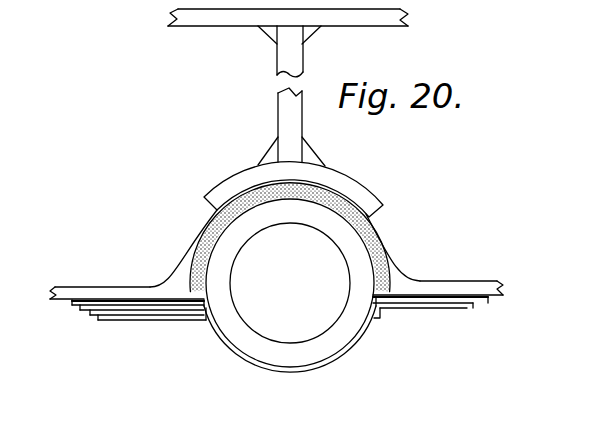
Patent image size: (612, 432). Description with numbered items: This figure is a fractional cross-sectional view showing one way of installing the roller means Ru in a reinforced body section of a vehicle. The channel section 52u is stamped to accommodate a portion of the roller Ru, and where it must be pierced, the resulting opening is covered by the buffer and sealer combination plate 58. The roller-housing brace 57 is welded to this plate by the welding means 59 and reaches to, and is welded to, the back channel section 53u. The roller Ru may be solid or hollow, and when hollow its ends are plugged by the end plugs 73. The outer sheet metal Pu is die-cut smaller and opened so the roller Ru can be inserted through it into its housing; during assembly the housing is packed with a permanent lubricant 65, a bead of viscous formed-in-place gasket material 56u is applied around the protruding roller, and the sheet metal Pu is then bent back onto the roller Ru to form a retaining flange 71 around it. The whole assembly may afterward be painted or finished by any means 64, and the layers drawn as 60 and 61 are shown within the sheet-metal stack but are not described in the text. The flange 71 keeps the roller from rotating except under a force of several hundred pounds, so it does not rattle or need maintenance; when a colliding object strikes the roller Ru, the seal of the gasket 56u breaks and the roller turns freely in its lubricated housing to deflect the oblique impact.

The back channel section 53u is at (178, 28).
The roller-housing brace 57 is at (304, 59).
The welding means 59 is at (269, 38).
The buffer and sealer combination plate 58 is at (372, 190).
The permanent lubricant 65 is at (323, 193).
The retaining flange 71 is at (212, 306).
The end plug 73 is at (258, 340).
The roller means Ru is at (320, 368).
The formed-in-place gasket material 56u is at (190, 290).
The channel section 52u is at (115, 286).
The sheet metal Pu is at (108, 302).
The first ply layer 60 is at (138, 308).
The second ply layer 61 is at (168, 312).
The finishing means 64 is at (360, 337).